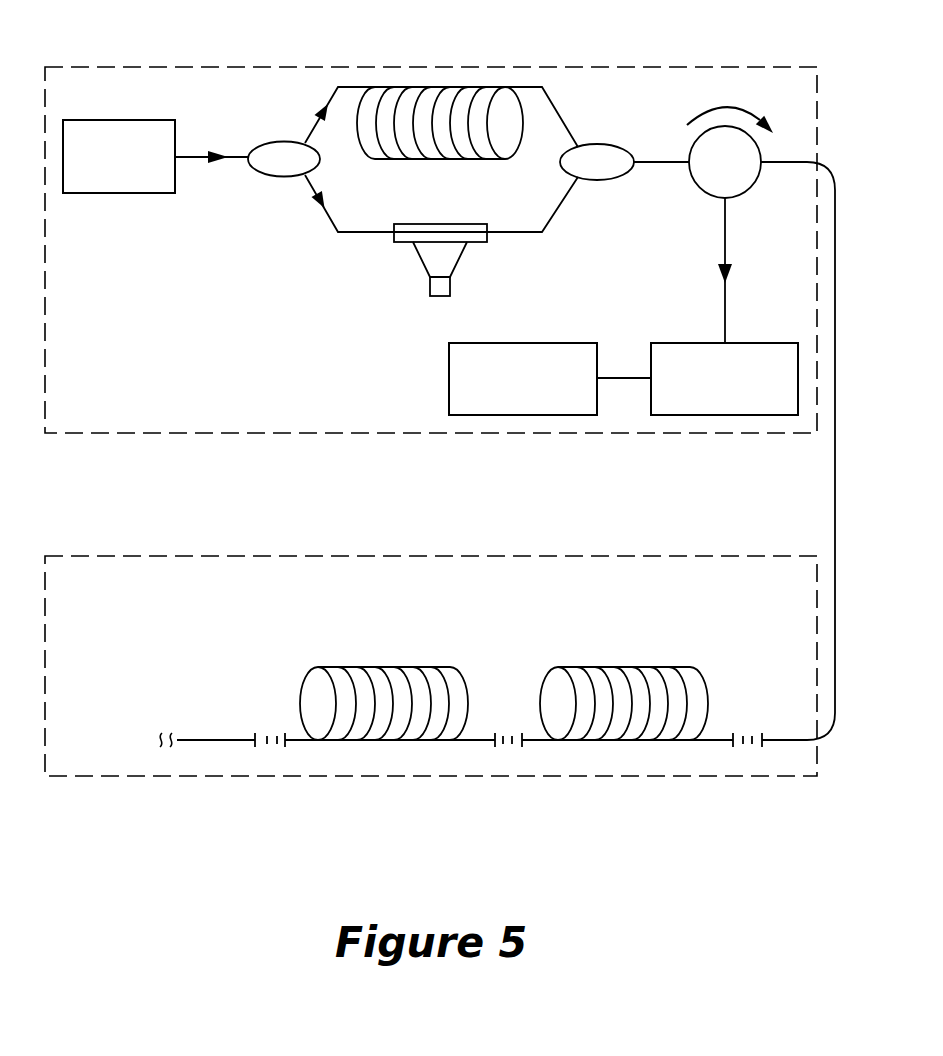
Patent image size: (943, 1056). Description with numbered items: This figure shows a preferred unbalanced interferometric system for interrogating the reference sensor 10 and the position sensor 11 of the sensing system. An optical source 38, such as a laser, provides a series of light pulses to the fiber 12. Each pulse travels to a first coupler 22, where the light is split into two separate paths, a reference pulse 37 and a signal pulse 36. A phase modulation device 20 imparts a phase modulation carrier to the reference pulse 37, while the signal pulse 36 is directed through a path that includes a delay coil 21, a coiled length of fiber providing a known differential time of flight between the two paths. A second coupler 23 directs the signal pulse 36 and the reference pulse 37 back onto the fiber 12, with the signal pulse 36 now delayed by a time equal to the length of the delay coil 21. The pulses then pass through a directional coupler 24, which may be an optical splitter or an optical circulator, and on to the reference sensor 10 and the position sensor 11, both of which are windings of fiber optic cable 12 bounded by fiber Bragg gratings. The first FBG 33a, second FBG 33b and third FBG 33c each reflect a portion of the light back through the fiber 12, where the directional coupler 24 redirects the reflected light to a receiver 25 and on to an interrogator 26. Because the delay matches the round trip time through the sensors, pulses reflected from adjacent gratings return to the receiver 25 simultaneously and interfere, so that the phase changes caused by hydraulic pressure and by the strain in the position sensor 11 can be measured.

The reference sensor 10 is at (628, 752).
The position sensor 11 is at (378, 752).
The fiber optic cable 12 is at (192, 157).
The phase modulation device 20 is at (422, 260).
The delay coil 21 is at (442, 87).
The first coupler 22 is at (266, 177).
The second coupler 23 is at (606, 180).
The directional coupler 24 is at (694, 185).
The receiver 25 is at (774, 343).
The interrogator 26 is at (544, 343).
The first fiber Bragg grating 33a is at (733, 747).
The second fiber Bragg grating 33b is at (495, 747).
The third fiber Bragg grating 33c is at (255, 747).
The signal pulse 36 is at (300, 127).
The reference pulse 37 is at (300, 192).
The optical source 38 is at (118, 193).